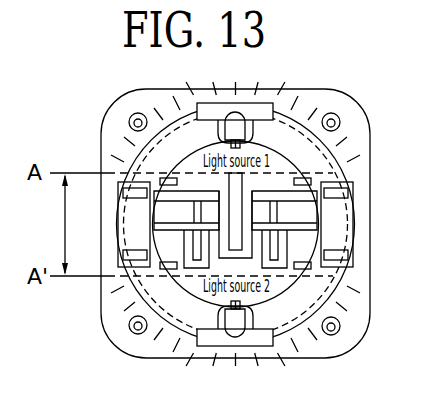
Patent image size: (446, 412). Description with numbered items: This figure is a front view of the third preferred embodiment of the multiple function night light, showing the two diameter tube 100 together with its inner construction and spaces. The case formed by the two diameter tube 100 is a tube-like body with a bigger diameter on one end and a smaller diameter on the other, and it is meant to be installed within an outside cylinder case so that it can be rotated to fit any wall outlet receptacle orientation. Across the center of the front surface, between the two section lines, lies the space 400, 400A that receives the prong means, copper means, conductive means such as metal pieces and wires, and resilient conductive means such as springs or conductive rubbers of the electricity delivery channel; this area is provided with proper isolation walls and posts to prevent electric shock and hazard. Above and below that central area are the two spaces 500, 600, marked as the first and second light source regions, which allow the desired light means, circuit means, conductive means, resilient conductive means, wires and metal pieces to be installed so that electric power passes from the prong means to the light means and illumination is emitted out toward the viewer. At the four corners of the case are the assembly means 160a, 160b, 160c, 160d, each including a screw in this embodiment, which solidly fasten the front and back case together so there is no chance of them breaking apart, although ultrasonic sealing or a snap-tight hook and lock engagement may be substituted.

The two diameter tube 100 is at (102, 137).
The assembly means 160a is at (332, 120).
The assembly means 160b is at (336, 331).
The assembly means 160c is at (133, 328).
The assembly means 160d is at (137, 116).
The space 400 is at (346, 256).
The space 400A is at (125, 256).
The space 500 is at (285, 304).
The space 600 is at (276, 142).